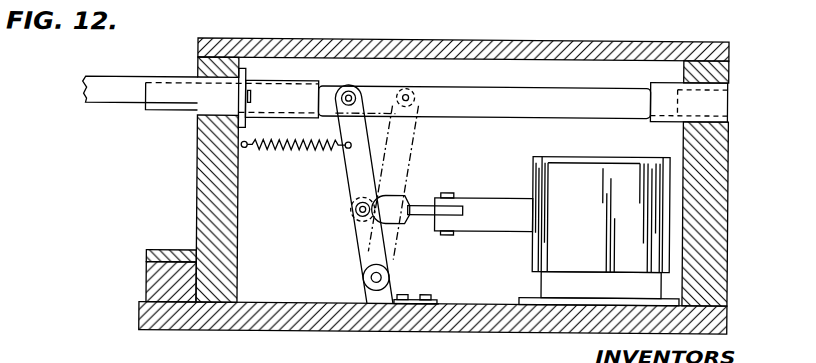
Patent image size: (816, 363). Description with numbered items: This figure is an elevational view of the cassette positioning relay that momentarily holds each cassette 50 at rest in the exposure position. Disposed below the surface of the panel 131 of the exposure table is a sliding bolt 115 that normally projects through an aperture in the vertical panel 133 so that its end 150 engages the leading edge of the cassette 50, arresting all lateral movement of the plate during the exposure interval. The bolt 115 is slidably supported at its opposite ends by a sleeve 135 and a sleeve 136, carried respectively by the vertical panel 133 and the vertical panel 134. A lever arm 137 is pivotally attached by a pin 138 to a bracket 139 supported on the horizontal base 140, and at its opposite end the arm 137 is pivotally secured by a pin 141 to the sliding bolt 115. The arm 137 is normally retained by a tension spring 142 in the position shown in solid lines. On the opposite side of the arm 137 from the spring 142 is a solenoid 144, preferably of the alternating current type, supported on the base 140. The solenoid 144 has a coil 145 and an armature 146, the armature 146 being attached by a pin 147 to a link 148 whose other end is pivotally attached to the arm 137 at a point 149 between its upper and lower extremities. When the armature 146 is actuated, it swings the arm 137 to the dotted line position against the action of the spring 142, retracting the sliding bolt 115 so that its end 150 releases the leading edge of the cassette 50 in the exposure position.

The cassette 50 is at (100, 98).
The sliding bolt 115 is at (525, 94).
The panel 131 is at (443, 51).
The vertical panel 133 is at (237, 223).
The vertical panel 134 is at (713, 59).
The sleeve 135 is at (283, 78).
The sleeve 136 is at (665, 81).
The lever arm 137 is at (385, 156).
The pin 138 is at (389, 271).
The bracket 139 is at (407, 303).
The horizontal base 140 is at (290, 303).
The pin 141 is at (354, 89).
The tension spring 142 is at (273, 151).
The solenoid 144 is at (548, 244).
The coil 145 is at (555, 167).
The armature 146 is at (481, 235).
The pin 147 is at (447, 190).
The link 148 is at (403, 201).
The point 149 is at (355, 216).
The end 150 is at (157, 112).